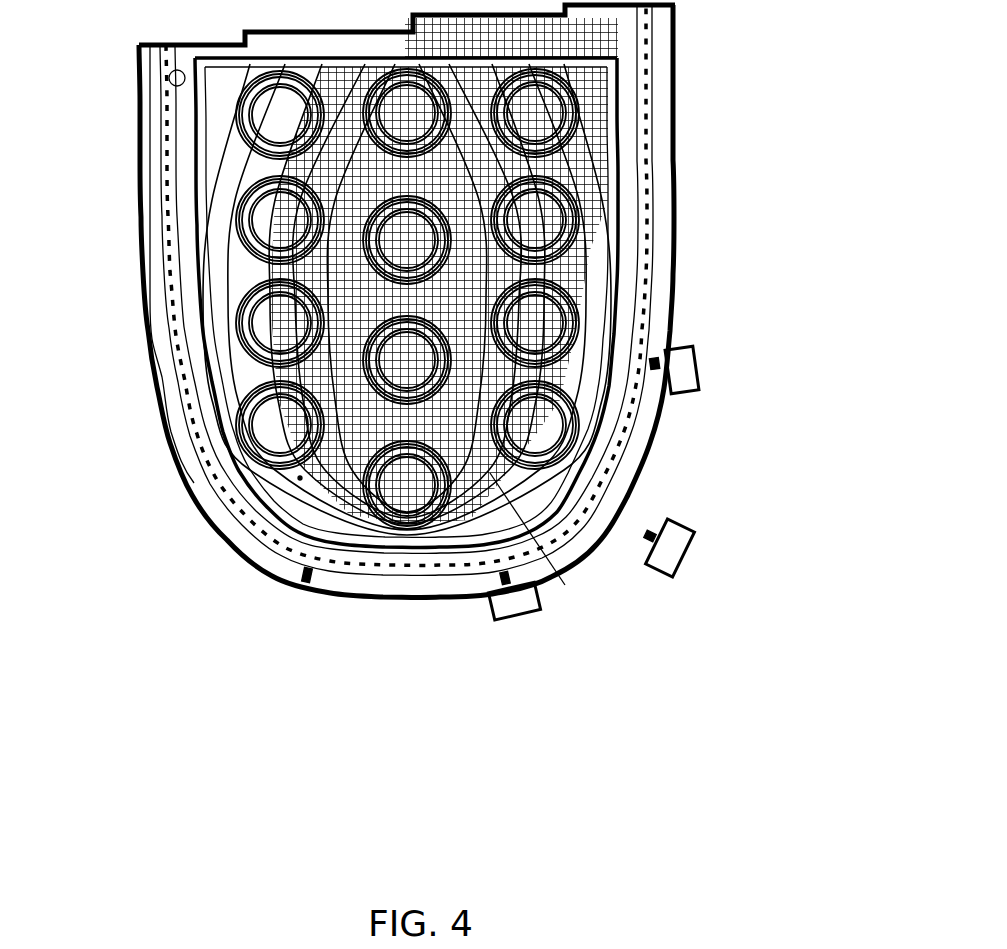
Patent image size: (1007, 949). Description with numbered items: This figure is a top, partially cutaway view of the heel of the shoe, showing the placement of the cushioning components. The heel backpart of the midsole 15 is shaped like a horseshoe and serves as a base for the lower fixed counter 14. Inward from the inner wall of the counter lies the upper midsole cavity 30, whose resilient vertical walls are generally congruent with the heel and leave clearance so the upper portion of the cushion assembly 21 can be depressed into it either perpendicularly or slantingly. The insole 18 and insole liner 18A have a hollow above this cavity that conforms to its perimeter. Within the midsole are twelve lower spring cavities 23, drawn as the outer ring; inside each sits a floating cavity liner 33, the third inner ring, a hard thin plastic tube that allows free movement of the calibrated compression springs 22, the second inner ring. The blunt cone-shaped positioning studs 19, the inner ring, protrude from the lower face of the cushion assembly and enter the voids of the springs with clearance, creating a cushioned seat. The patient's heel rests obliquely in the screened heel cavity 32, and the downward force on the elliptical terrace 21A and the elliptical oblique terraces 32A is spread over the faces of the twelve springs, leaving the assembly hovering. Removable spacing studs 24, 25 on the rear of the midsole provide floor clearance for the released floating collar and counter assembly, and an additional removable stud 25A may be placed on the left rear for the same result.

The lower fixed counter 14 is at (647, 94).
The midsole 15 is at (137, 113).
The insole 18 is at (169, 78).
The insole liner 18A is at (180, 182).
The positioning studs 19 is at (212, 445).
The upper portion of the cushion assembly 21 is at (610, 175).
The elliptical terrace 21A is at (300, 478).
The calibrated compression springs 22 is at (232, 335).
The lower spring cavities 23 is at (235, 405).
The removable spacing studs 24 is at (545, 688).
The removable spacing stud 25 is at (690, 552).
The additional removable stud 25A is at (305, 587).
The upper midsole cavity 30 is at (622, 140).
The heel cavity 32 is at (477, 275).
The elliptical oblique terraces 32A is at (455, 445).
The floating cavity liners 33 is at (230, 238).